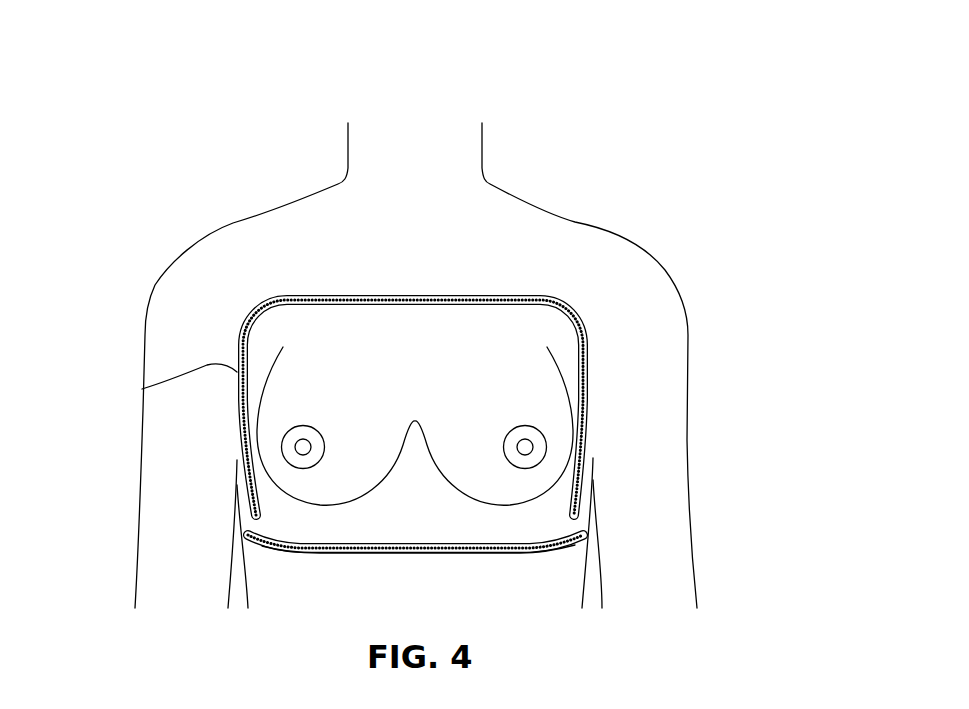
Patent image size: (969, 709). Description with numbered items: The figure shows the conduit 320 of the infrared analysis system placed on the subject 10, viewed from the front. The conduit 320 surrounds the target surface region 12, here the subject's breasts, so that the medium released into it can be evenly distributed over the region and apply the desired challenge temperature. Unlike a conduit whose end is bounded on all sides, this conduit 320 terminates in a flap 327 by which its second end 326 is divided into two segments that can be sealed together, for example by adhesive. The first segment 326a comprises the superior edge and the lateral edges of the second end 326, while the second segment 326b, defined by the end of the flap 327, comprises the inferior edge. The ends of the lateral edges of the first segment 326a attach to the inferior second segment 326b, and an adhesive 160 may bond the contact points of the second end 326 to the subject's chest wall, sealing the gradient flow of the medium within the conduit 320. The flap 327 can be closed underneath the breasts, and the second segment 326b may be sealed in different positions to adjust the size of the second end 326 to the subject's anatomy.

The subject 10 is at (538, 228).
The target surface region 12 is at (512, 395).
The adhesive 160 is at (142, 389).
The conduit 320 is at (551, 405).
The second end 326 is at (551, 429).
The first segment 326a is at (580, 483).
The second segment 326b is at (572, 552).
The flap 327 is at (427, 553).